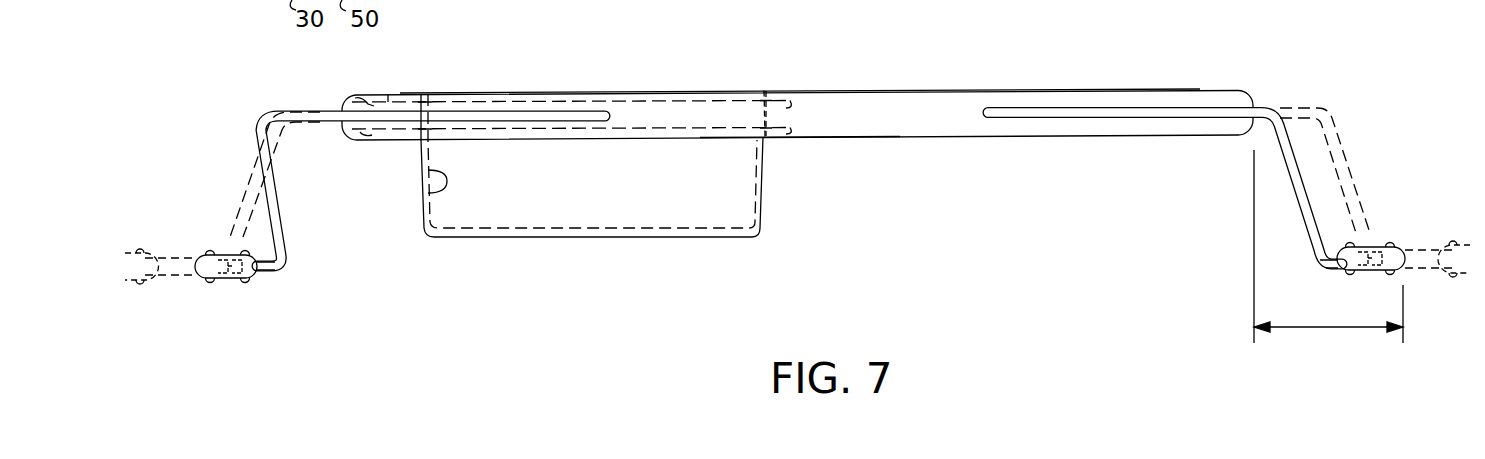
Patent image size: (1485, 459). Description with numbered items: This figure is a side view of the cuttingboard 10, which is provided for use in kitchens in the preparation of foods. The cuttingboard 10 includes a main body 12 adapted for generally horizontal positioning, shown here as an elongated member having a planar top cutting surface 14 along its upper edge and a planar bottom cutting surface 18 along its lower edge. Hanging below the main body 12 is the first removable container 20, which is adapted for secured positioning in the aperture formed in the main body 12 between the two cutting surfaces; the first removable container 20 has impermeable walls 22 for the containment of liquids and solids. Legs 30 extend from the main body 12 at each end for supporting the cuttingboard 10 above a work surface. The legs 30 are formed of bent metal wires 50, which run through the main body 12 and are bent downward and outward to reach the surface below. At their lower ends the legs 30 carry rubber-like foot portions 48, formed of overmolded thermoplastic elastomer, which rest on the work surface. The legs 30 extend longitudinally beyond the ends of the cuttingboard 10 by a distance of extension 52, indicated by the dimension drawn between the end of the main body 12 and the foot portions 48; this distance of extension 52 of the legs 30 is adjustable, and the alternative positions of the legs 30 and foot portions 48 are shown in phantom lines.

The cuttingboard 10 is at (955, 76).
The main body 12 is at (897, 122).
The planar top cutting surface 14 is at (877, 93).
The planar bottom cutting surface 18 is at (802, 138).
The first removable container 20 is at (543, 237).
The impermeable walls 22 is at (430, 187).
The legs 30 is at (302, 168).
The foot portions 48 is at (243, 280).
The bent metal wires 50 is at (270, 272).
The distance of extension 52 is at (1323, 327).